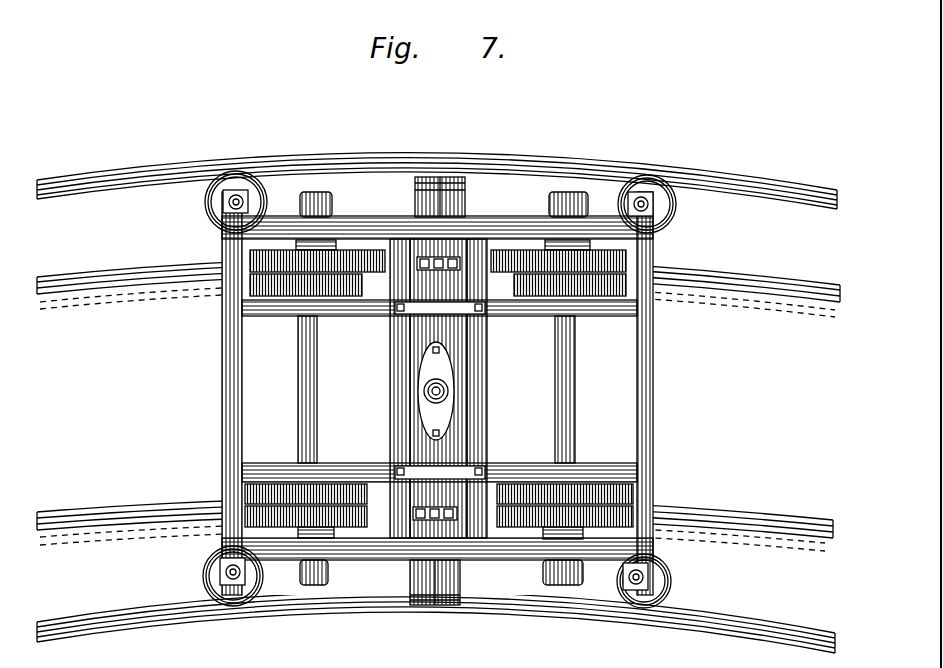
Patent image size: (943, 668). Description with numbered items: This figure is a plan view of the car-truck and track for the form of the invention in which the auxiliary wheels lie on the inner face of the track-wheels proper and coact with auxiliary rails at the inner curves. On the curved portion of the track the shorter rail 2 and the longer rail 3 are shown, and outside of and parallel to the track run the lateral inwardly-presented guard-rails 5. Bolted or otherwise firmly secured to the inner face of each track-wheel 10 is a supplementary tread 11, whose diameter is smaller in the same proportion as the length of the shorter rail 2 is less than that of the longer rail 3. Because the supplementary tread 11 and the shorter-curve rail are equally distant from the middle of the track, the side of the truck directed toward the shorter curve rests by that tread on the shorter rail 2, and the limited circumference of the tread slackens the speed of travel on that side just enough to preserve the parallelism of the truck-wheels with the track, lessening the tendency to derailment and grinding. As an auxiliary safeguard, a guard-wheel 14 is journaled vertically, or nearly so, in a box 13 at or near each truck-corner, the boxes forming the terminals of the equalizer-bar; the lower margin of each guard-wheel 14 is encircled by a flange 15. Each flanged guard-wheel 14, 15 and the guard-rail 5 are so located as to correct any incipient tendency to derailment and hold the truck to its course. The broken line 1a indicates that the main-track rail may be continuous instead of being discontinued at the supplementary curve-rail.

The broken line (continuous main-track rail) 1a is at (62, 538).
The shorter rail 2 is at (435, 511).
The longer rail 3 is at (438, 276).
The guard-rail 5 is at (437, 403).
The track-wheel 10 is at (666, 531).
The supplementary tread 11 is at (590, 494).
The box 13 is at (262, 191).
The guard-wheel 14 is at (221, 201).
The flange 15 is at (214, 221).